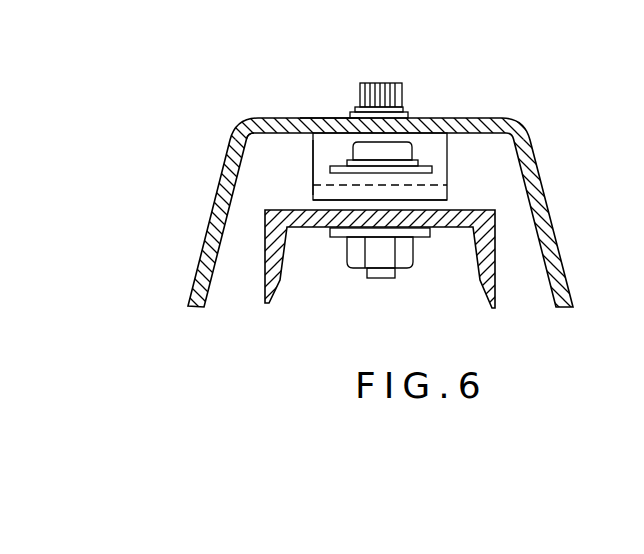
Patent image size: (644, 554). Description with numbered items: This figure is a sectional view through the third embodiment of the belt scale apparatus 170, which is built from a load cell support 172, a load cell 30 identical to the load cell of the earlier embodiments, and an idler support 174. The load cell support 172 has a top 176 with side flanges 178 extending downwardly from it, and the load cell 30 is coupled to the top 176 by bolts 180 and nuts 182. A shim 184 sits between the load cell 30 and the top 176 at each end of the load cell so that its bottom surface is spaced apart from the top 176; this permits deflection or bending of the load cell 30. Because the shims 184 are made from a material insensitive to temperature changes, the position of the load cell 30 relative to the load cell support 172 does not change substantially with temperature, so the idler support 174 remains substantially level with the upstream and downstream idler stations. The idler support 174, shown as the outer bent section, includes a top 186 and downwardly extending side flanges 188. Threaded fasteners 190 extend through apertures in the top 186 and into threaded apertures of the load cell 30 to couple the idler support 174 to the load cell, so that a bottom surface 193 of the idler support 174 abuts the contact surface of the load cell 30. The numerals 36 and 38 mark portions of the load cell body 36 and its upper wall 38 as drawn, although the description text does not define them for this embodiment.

The load cell 30 is at (292, 173).
The housing body 36 is at (435, 180).
The top wall of housing 38 is at (330, 126).
The belt scale apparatus 170 is at (173, 126).
The load cell support 172 is at (268, 312).
The idler support 174 is at (540, 109).
The top 176 is at (455, 214).
The side flanges 178 is at (272, 257).
The bolts 180 is at (406, 152).
The nuts 182 is at (391, 258).
The shim 184 is at (326, 204).
The top 186 is at (486, 124).
The side flanges 188 is at (222, 184).
The threaded fasteners 190 is at (383, 82).
The bottom surface 193 is at (249, 133).